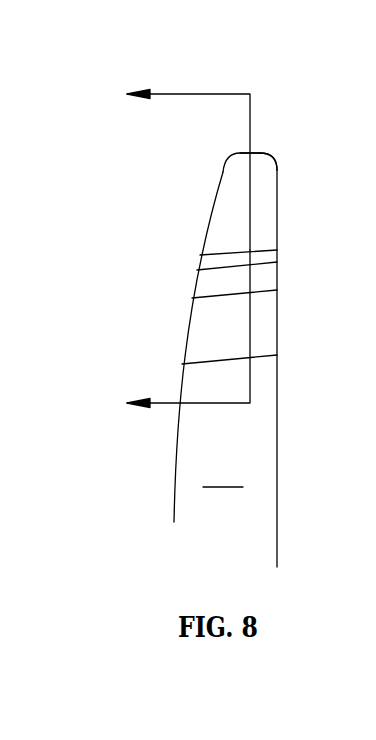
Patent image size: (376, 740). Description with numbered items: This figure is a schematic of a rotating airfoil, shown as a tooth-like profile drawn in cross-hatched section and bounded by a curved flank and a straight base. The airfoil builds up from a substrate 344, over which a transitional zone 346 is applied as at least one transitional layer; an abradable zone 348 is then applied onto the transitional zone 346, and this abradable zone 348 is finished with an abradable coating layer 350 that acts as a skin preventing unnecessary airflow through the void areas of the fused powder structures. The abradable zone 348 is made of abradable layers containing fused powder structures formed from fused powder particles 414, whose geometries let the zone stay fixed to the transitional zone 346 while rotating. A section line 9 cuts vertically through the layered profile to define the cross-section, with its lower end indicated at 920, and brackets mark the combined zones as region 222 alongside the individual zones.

The section line 9- 9 is at (183, 158).
The section line indicator 920 is at (187, 345).
The cutting tooth 222 is at (232, 153).
The substrate 344 is at (253, 437).
The transitional zone 346 is at (283, 250).
The abradable zone 348 is at (279, 153).
The abradable coating layer 350 is at (262, 170).
The fused powder particles 414 is at (184, 347).